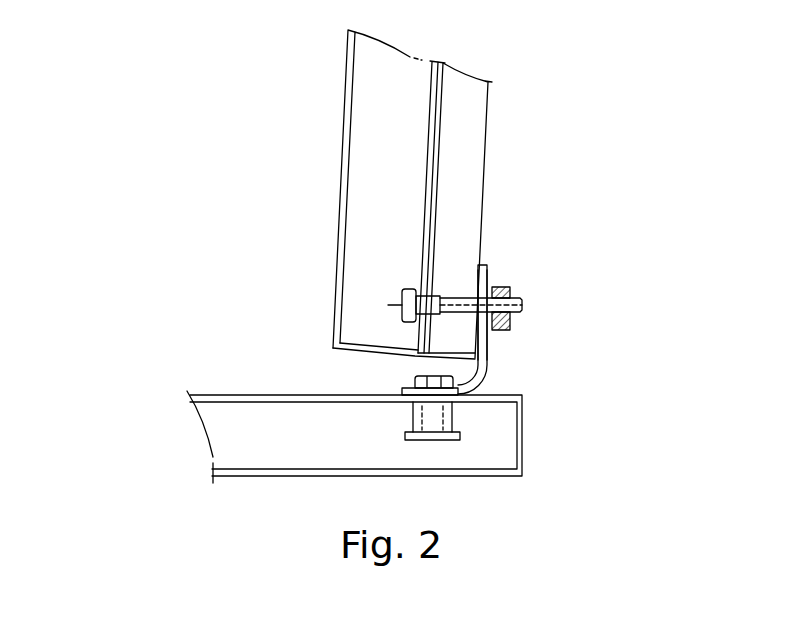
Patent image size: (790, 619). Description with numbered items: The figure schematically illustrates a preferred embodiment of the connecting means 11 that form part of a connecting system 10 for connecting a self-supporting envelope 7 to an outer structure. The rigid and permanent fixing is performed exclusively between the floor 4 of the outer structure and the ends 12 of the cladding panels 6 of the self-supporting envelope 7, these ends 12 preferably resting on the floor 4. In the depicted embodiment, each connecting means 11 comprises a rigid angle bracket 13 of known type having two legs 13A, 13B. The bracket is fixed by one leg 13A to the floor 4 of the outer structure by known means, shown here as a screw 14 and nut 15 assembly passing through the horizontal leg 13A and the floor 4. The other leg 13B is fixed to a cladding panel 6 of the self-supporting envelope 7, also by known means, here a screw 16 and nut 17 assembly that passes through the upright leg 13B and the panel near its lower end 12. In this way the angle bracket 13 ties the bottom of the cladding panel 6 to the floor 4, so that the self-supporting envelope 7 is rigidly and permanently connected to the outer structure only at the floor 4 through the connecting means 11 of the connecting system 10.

The floor 4 is at (258, 463).
The cladding panel 6 is at (485, 170).
The self-supporting envelope 7 is at (503, 124).
The connecting system 10 is at (165, 336).
The connecting means 11 is at (253, 180).
The end of cladding panel 12 is at (305, 330).
The rigid angle bracket 13 is at (488, 367).
The leg of angle bracket 13A is at (468, 398).
The leg of angle bracket 13B is at (488, 270).
The screw 14 is at (415, 382).
The nut 15 is at (405, 427).
The screw 16 is at (407, 290).
The nut 17 is at (496, 324).